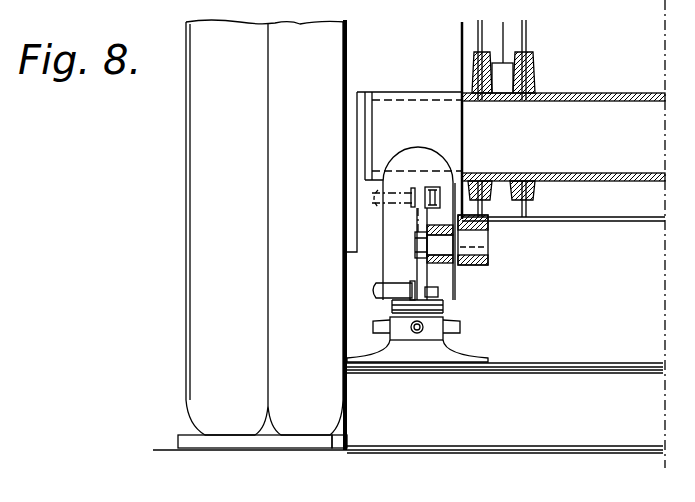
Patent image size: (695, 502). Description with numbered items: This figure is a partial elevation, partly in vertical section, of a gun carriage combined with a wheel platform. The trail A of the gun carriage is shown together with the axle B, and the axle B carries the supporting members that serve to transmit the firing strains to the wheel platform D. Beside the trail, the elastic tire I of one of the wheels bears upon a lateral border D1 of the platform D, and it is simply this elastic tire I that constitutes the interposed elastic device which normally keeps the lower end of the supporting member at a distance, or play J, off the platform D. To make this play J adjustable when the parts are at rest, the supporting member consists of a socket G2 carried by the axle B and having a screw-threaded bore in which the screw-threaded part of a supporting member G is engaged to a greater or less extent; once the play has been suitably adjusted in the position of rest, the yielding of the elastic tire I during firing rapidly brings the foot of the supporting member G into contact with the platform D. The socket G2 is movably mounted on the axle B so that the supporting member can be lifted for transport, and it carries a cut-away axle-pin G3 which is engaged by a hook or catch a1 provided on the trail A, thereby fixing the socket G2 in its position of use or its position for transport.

The trail A is at (512, 36).
The axle B is at (593, 116).
The hook a1 is at (488, 260).
The supporting member G is at (443, 305).
The socket G2 is at (442, 282).
The cut-away axle-pin G3 is at (438, 247).
The elastic tire I is at (305, 326).
The play J is at (488, 361).
The wheel platform D is at (607, 378).
The lateral border D1 is at (263, 443).